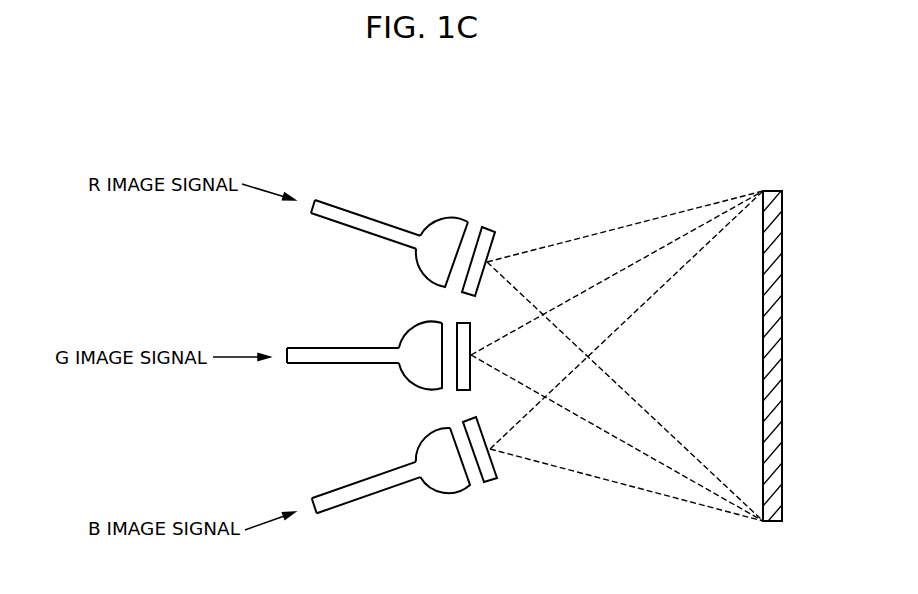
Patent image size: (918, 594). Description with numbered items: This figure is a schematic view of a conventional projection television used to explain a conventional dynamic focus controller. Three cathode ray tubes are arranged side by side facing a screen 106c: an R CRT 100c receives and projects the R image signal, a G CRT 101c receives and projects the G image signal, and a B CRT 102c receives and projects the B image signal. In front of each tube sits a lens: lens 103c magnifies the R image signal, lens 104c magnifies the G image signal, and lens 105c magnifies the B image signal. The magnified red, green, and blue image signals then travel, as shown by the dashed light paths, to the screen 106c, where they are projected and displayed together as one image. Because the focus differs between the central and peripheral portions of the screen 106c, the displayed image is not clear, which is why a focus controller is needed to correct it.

The R CRT 100c is at (452, 222).
The G CRT 101c is at (415, 330).
The B CRT 102c is at (453, 489).
The lens 103c is at (490, 229).
The lens 104c is at (462, 392).
The lens 105c is at (492, 481).
The screen 106c is at (773, 188).